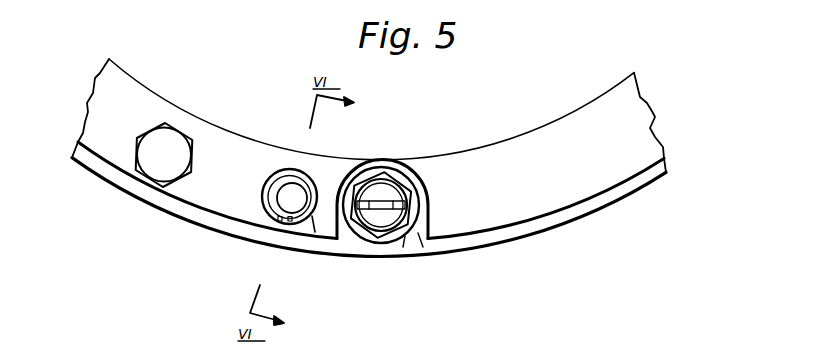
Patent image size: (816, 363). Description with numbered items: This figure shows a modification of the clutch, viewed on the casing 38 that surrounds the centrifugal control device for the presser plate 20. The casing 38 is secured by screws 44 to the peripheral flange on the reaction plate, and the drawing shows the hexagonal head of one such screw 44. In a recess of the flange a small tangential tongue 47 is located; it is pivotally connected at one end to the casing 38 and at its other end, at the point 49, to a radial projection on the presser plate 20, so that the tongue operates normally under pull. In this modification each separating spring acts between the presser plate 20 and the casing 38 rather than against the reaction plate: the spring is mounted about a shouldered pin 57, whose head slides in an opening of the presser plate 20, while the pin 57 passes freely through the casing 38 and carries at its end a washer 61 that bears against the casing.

The presser plate 20 is at (585, 217).
The casing 38 is at (528, 220).
The screws 44 is at (150, 186).
The tangential tongue 47 is at (413, 238).
The pivotal connection 49 is at (397, 243).
The shouldered pin 57 is at (280, 202).
The washer 61 is at (308, 223).